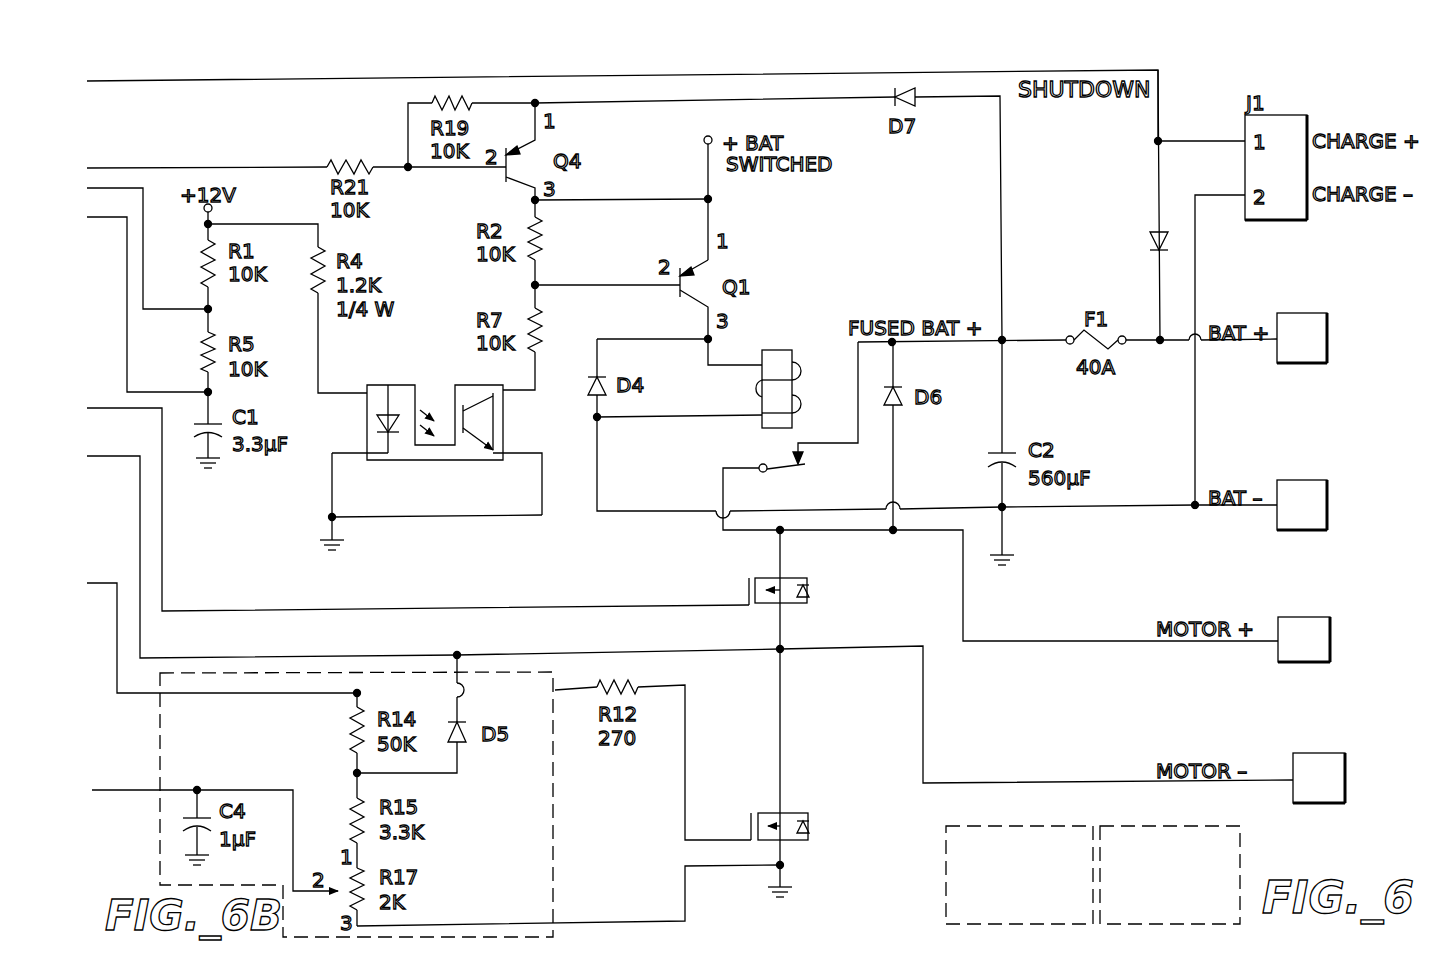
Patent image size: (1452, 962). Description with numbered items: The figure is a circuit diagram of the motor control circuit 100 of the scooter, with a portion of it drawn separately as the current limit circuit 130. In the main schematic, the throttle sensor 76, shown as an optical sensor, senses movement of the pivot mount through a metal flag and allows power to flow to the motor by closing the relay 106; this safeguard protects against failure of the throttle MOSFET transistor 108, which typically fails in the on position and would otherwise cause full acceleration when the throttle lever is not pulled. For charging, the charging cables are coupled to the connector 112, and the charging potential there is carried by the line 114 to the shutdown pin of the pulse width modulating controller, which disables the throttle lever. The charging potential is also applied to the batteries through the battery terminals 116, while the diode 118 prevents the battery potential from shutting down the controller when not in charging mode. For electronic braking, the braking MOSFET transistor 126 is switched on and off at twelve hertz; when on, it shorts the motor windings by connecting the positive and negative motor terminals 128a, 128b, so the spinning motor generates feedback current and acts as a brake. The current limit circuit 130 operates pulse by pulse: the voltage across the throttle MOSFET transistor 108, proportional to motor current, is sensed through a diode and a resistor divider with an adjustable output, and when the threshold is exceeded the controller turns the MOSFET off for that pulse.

In FIG. 6, the throttle sensor 76 is at (488, 385).
In FIG. 6, the motor control circuit 100 is at (920, 873).
In FIG. 6, the relay 106 is at (792, 355).
In FIG. 6, the throttle MOSFET transistor 108 is at (773, 813).
In FIG. 6, the connector 112 is at (1243, 180).
In FIG. 6, the line 114 is at (1160, 110).
In FIG. 6, the battery terminals 116 is at (1310, 312).
In FIG. 6, the diode 118 is at (1155, 232).
In FIG. 6, the braking MOSFET transistor 126 is at (760, 578).
In FIG. 6, the positive motor terminal 128a is at (1313, 616).
In FIG. 6, the negative motor terminal 128b is at (1330, 752).
In FIG. 6B, the current limit circuit 130 is at (160, 745).